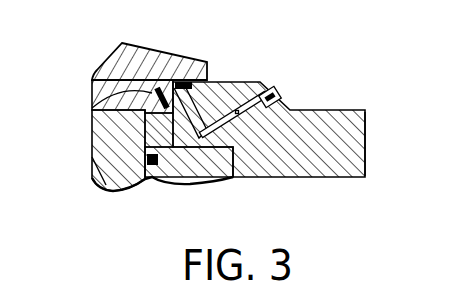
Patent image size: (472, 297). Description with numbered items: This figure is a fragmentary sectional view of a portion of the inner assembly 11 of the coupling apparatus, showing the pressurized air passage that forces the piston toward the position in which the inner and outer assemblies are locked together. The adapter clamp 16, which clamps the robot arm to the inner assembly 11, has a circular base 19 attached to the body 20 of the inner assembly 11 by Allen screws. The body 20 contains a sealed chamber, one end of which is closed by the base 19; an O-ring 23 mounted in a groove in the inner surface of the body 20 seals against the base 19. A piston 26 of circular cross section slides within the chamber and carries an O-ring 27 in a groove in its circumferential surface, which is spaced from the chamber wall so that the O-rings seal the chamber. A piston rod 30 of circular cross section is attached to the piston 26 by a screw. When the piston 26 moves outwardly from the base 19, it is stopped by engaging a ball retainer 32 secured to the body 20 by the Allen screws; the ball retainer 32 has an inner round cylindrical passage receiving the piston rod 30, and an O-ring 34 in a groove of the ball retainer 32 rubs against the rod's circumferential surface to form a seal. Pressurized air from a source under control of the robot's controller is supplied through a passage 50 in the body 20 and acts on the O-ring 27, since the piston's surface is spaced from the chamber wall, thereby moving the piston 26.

The inner assembly 11 is at (366, 142).
The adapter clamp 16 is at (222, 52).
The circular base 19 is at (176, 55).
The body 20 is at (366, 164).
The O-ring 23 is at (210, 60).
The piston 26 is at (92, 88).
The O-ring 27 is at (92, 104).
The piston rod 30 is at (108, 149).
The ball retainer 32 is at (193, 163).
The O-ring 34 is at (116, 178).
The passage 50 is at (227, 112).